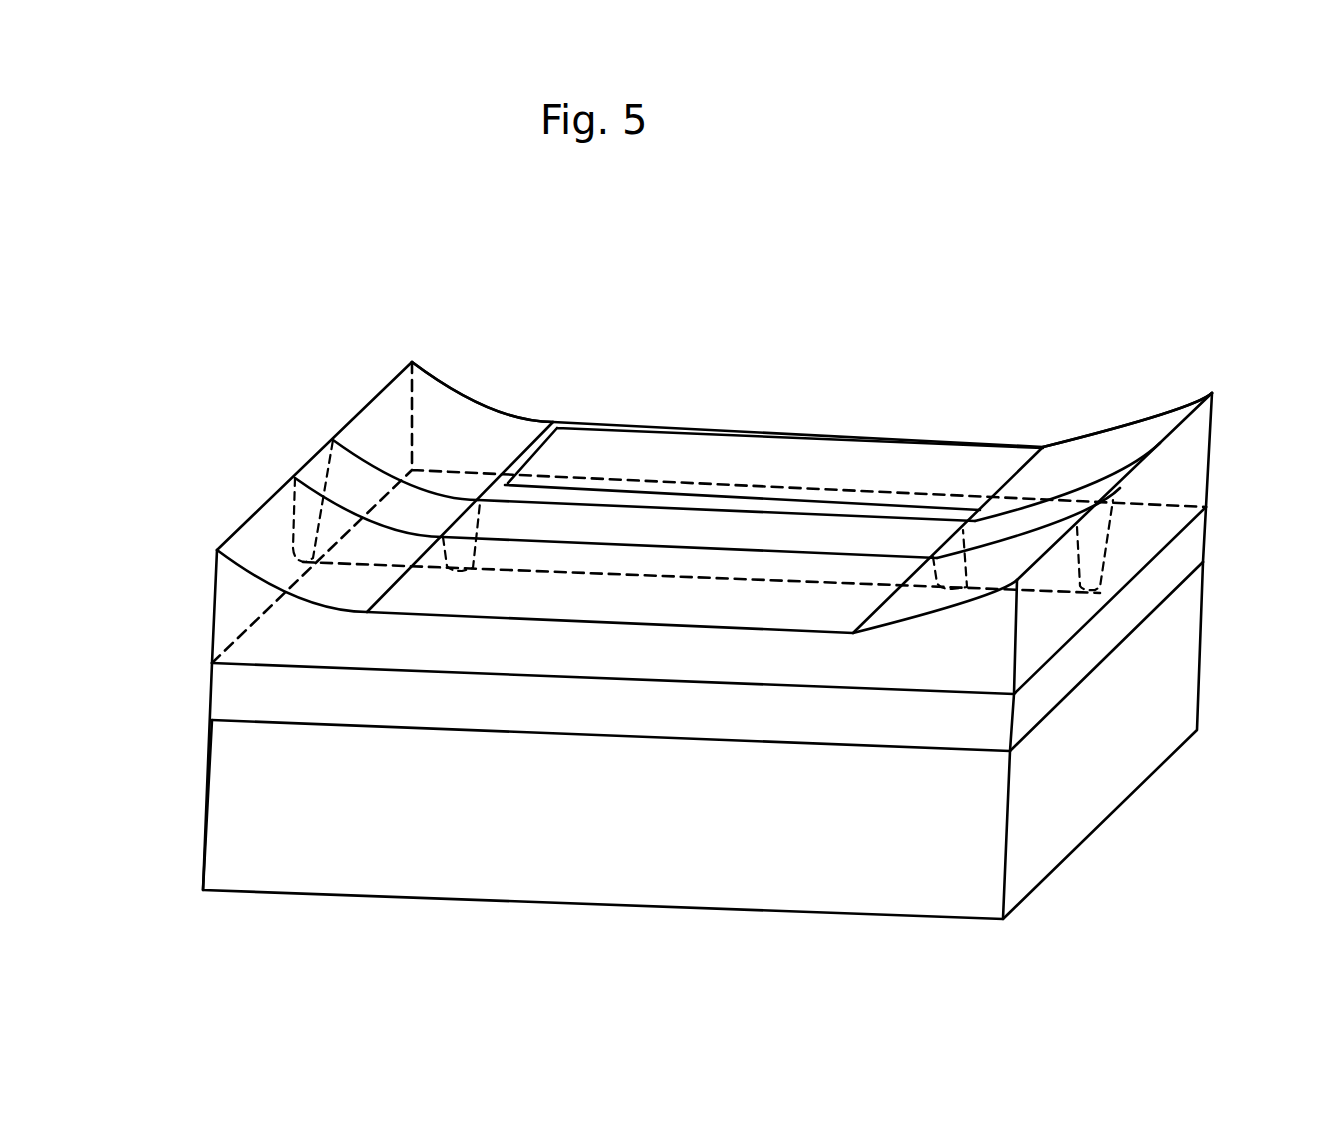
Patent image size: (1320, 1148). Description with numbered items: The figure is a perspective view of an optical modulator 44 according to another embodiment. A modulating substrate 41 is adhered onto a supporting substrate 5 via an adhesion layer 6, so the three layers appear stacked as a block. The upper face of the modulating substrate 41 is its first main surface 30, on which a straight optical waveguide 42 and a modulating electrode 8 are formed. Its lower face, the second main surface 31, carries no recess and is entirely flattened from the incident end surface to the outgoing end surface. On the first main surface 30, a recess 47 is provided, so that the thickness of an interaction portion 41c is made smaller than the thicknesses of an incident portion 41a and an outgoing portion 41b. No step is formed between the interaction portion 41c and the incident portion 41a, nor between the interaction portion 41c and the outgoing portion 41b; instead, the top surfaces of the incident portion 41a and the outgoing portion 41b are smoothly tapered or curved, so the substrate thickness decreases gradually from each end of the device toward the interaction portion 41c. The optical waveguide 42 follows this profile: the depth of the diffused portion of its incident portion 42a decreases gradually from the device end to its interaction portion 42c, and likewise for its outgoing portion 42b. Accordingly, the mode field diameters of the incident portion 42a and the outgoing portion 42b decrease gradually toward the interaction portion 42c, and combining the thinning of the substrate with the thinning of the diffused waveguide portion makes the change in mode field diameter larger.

The supporting substrate 5 is at (228, 822).
The adhesion layer 6 is at (228, 702).
The modulating electrode 8 is at (635, 447).
The first main surface 30 is at (287, 540).
The second main surface 31 is at (540, 678).
The modulating substrate 41 is at (228, 610).
The incident portion 41a is at (1133, 443).
The outgoing portion 41b is at (470, 410).
The interaction portion 41c is at (742, 432).
The optical waveguide 42 is at (1100, 533).
The incident portion of the optical waveguide 42a is at (1018, 532).
The outgoing portion of the optical waveguide 42b is at (350, 483).
The interaction portion of the optical waveguide 42c is at (813, 533).
The optical modulator 44 is at (1097, 397).
The recess 47 is at (602, 364).